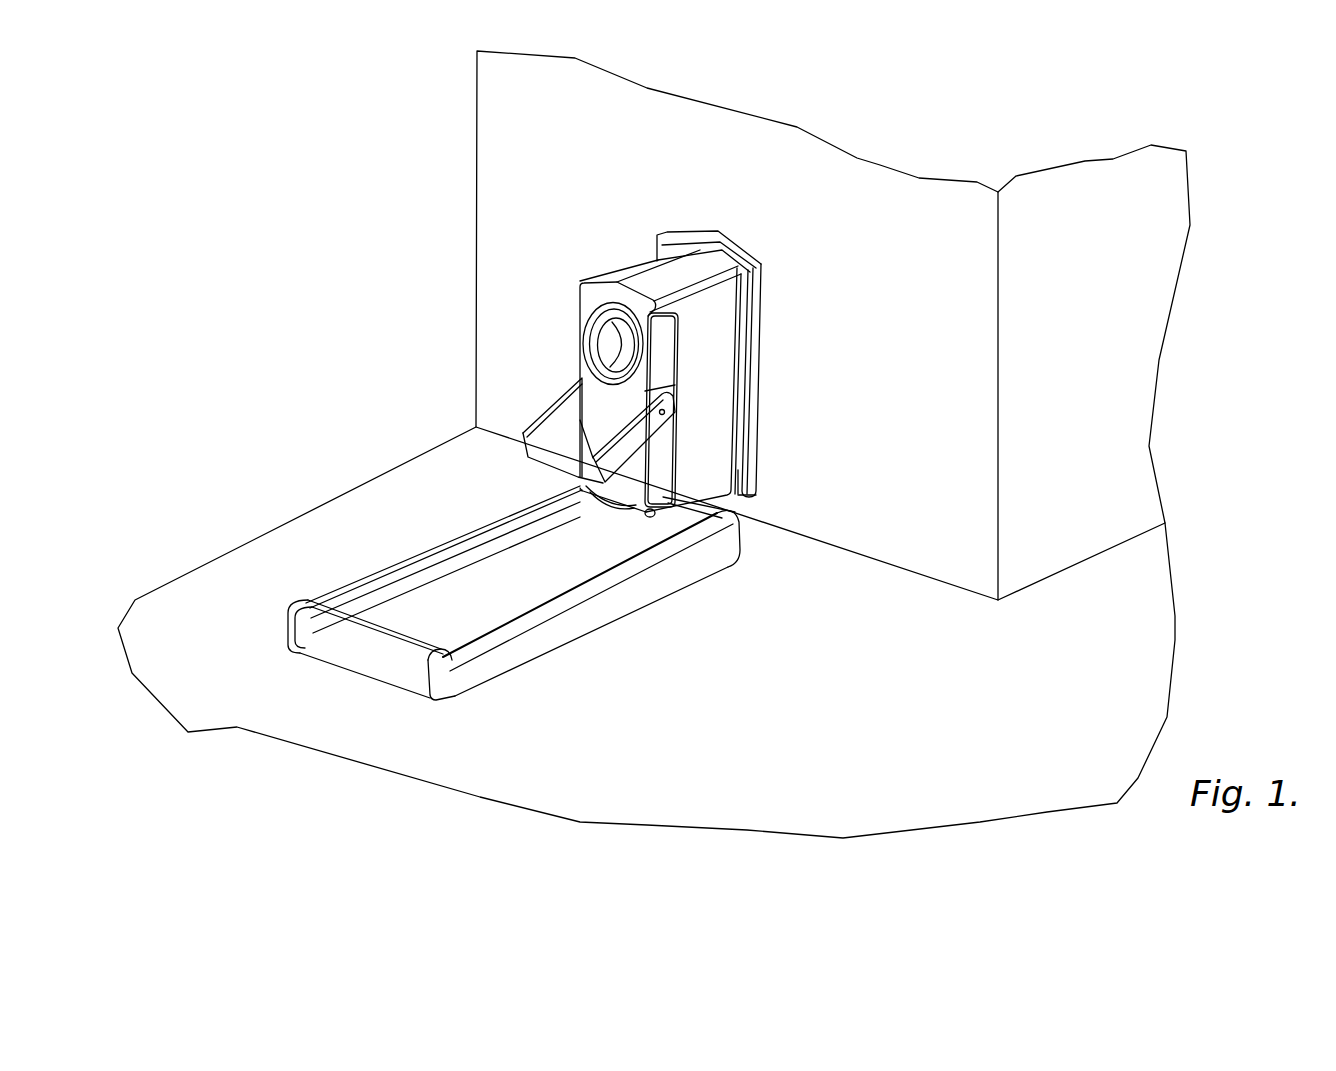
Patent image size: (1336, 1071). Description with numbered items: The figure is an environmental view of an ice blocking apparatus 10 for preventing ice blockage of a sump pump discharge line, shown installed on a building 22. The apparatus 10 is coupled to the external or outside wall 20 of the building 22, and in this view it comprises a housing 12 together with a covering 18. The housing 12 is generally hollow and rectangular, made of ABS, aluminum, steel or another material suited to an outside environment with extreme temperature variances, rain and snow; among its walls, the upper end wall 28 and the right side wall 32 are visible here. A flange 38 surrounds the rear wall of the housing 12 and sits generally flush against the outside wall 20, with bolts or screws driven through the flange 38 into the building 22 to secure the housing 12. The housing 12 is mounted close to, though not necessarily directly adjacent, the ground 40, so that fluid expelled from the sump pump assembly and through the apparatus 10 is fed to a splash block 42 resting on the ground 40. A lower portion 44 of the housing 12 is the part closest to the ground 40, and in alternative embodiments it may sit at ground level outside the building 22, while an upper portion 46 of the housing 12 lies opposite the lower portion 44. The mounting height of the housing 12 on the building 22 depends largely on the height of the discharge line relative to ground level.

The ice blocking apparatus 10 is at (583, 238).
The housing 12 is at (540, 343).
The covering 18 is at (514, 484).
The outside wall 20 is at (922, 197).
The building 22 is at (872, 120).
The upper end wall 28 is at (655, 263).
The right side wall 32 is at (718, 398).
The flange 38 is at (762, 268).
The ground 40 is at (857, 676).
The splash block 42 is at (535, 640).
The lower portion 44 is at (796, 470).
The upper portion 46 is at (786, 315).